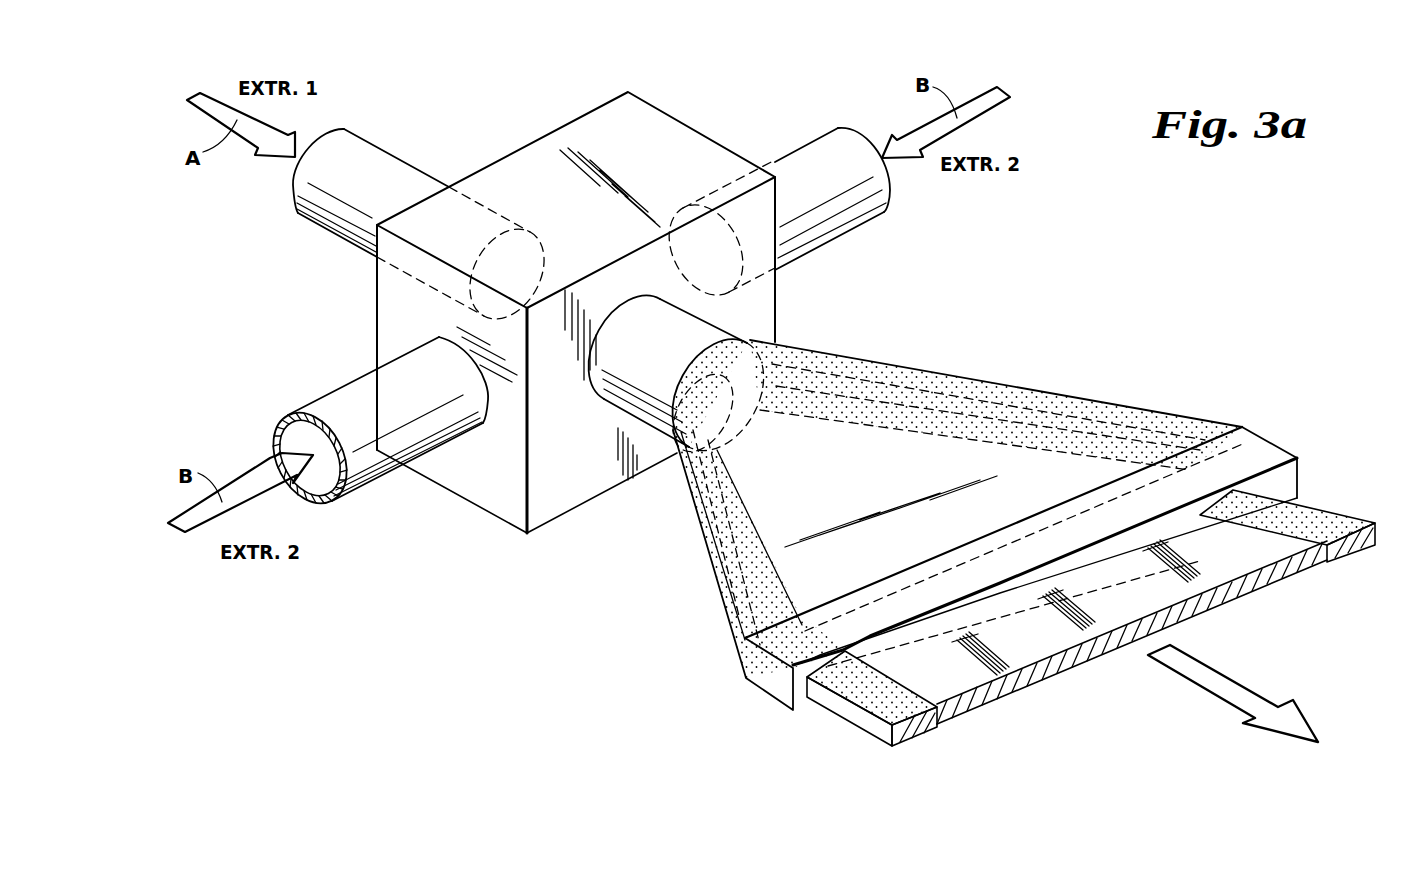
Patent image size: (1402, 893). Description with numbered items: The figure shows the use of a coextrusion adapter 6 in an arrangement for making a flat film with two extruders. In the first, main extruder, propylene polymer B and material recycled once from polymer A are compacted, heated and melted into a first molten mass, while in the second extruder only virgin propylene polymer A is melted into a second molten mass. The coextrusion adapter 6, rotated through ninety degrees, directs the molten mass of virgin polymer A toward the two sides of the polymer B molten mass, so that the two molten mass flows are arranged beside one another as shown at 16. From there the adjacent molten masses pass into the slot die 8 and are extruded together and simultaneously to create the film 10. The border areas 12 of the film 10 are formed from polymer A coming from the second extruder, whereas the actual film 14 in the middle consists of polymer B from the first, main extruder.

The coextrusion adapter 6 is at (602, 530).
The slot die 8 is at (1067, 400).
The film 10 is at (1343, 485).
The border areas 12 is at (1350, 550).
The actual film 14 is at (1042, 682).
The arrangement of molten mass flows beside one another 16 is at (752, 337).